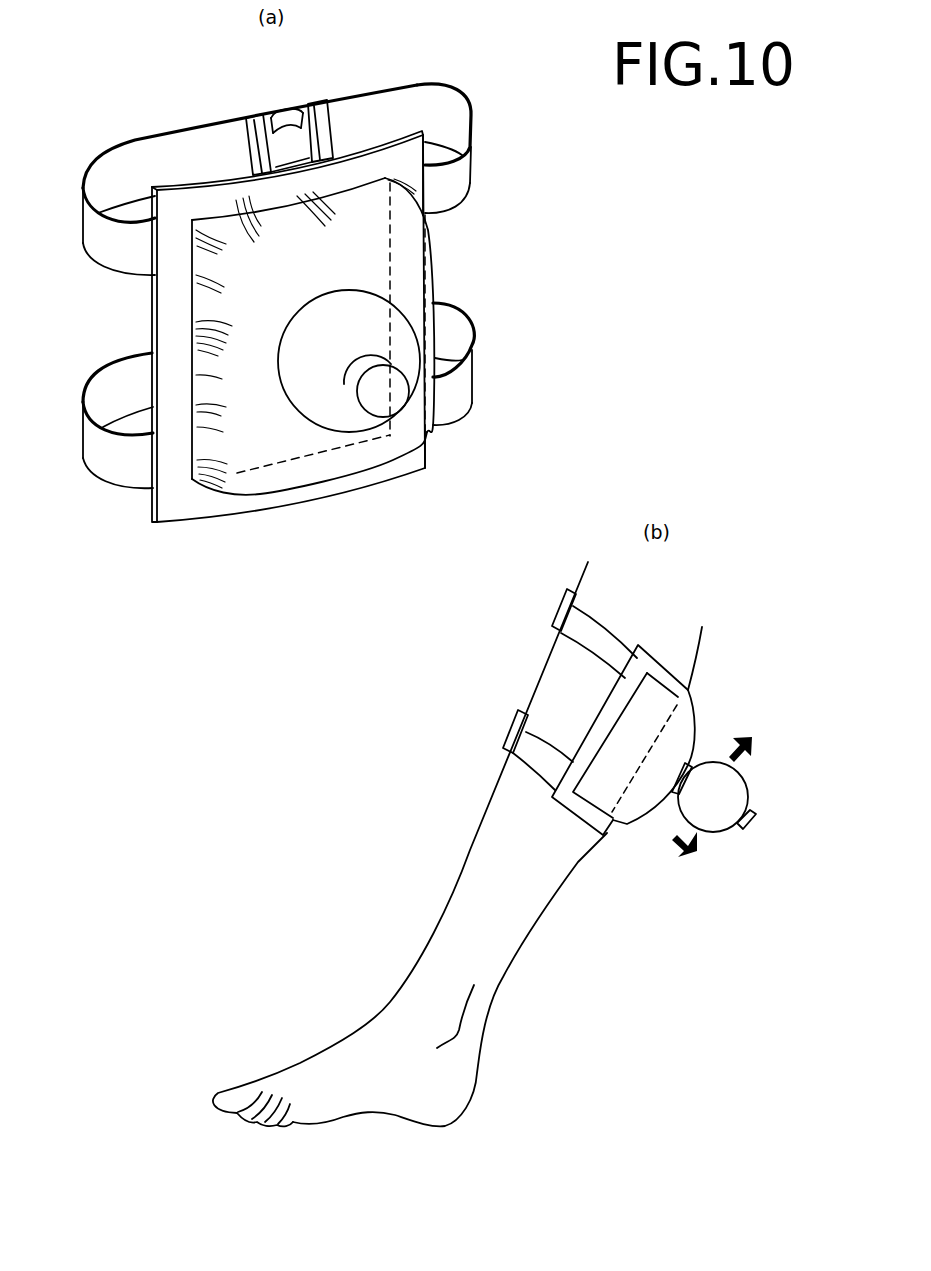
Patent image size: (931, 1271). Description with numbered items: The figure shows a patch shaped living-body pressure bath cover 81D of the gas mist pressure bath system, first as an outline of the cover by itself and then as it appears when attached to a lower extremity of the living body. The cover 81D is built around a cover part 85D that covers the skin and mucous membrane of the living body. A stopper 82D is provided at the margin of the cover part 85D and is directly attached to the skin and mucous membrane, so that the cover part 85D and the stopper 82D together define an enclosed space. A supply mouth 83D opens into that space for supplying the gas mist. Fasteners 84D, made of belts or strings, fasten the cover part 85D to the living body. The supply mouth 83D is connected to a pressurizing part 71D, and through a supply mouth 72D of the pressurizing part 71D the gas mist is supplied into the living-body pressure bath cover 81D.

The patch shaped living-body pressure bath cover 81D is at (478, 83).
The stopper 82D is at (167, 323).
The supply mouth 83D is at (672, 794).
The fasteners 84D is at (133, 143).
The cover part 85D is at (436, 268).
The pressurizing part 71D is at (353, 423).
The supply mouth of the pressurizing part 72D is at (385, 402).